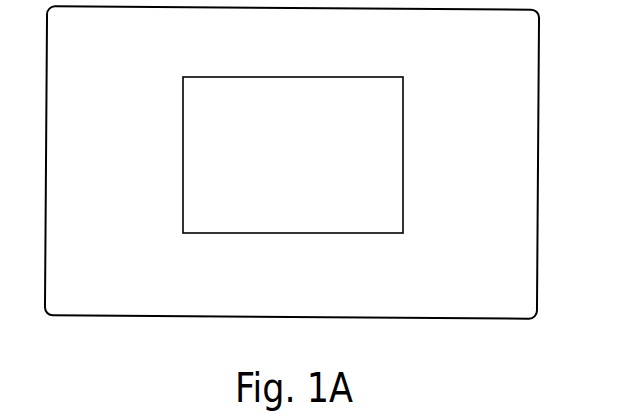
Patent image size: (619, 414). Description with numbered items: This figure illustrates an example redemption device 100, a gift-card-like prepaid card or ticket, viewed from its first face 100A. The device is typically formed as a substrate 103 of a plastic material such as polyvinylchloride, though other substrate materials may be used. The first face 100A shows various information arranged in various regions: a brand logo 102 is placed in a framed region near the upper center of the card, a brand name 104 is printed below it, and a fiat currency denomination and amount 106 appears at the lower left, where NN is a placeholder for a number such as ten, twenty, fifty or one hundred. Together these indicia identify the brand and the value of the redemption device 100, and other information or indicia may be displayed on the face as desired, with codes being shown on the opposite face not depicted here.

The redemption device 100 is at (291, 210).
The first face 100A is at (137, 47).
The brand logo 102 is at (398, 122).
The substrate 103 is at (503, 320).
The brand name 104 is at (422, 268).
The fiat currency denomination and amount 106 is at (99, 262).